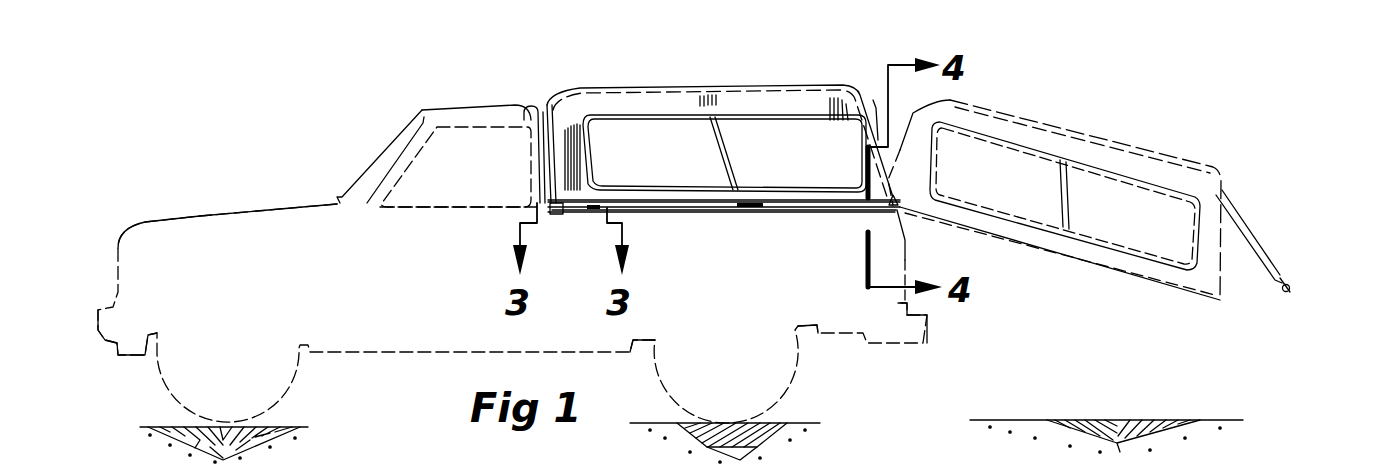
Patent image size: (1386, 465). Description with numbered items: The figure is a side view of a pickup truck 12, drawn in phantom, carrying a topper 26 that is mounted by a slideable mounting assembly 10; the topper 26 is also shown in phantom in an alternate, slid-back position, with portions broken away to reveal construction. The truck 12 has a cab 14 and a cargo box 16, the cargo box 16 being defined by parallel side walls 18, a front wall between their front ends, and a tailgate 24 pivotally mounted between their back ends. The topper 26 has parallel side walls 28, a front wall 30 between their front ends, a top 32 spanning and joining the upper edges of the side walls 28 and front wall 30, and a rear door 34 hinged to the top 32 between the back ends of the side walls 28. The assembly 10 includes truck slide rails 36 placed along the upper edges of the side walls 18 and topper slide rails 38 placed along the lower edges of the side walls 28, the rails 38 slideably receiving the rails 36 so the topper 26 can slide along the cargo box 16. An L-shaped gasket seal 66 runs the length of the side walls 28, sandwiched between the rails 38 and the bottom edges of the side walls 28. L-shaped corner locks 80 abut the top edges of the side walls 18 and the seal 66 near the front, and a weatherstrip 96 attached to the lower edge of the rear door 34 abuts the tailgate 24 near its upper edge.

The slideable mounting assembly 10 is at (670, 228).
The truck 12 is at (305, 160).
The cab 14 is at (447, 105).
The cargo box 16 is at (917, 303).
The side walls 18 is at (792, 286).
The tailgate 24 is at (906, 252).
The topper 26 is at (850, 76).
The side walls 28 is at (755, 103).
The front wall 30 is at (531, 112).
The top 32 is at (668, 88).
The rear door 34 is at (873, 100).
The truck slide rails 36 is at (745, 212).
The topper slide rails 38 is at (755, 192).
The gasket seal 66 is at (845, 212).
The corner locks 80 is at (563, 232).
The weatherstrip 96 is at (1285, 296).